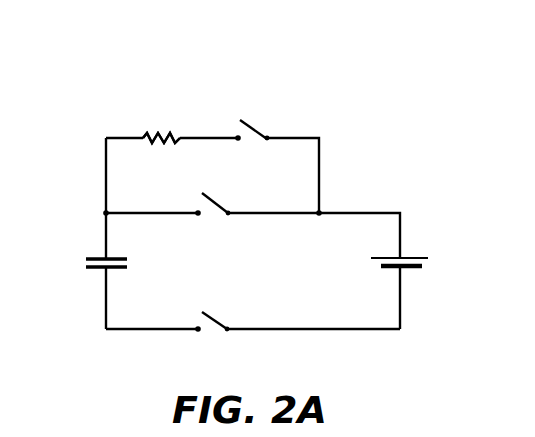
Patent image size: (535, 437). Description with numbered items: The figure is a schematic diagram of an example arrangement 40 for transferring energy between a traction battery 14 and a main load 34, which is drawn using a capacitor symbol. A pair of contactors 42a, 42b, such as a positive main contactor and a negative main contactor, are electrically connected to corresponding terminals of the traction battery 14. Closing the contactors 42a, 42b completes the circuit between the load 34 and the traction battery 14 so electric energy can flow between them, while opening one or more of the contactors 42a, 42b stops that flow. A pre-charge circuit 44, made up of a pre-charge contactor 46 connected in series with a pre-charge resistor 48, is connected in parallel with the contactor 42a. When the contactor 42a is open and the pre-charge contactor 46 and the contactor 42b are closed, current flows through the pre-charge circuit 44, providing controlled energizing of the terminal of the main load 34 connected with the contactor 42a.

The traction battery 14 is at (415, 257).
The main load 34 is at (113, 258).
The arrangement 40 is at (395, 153).
The contactor 42a is at (212, 196).
The contactor 42b is at (214, 317).
The pre-charge circuit 44 is at (99, 84).
The pre-charge contactor 46 is at (261, 130).
The pre-charge resistor 48 is at (177, 135).